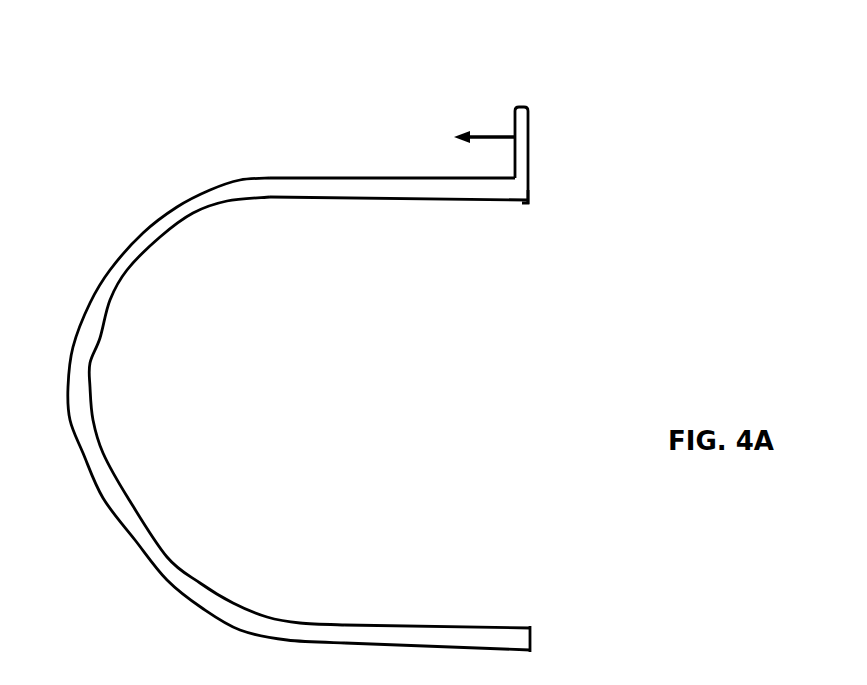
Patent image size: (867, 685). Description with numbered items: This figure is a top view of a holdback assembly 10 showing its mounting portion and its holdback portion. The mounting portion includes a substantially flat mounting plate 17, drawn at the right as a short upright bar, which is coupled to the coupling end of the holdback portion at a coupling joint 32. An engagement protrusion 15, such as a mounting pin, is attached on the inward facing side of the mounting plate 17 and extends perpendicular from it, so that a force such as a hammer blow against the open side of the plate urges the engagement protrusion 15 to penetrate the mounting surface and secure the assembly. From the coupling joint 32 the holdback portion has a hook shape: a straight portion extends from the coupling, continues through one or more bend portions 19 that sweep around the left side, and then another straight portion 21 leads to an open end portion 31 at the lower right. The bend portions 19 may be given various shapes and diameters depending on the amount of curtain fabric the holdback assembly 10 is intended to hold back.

The holdback assembly 10 is at (352, 84).
The engagement protrusions 15 is at (484, 126).
The mounting plate 17 is at (552, 147).
The bend portions 19 is at (134, 311).
The straight portion 21 is at (407, 210).
The open end portion 31 is at (543, 628).
The coupling joint 32 is at (530, 228).